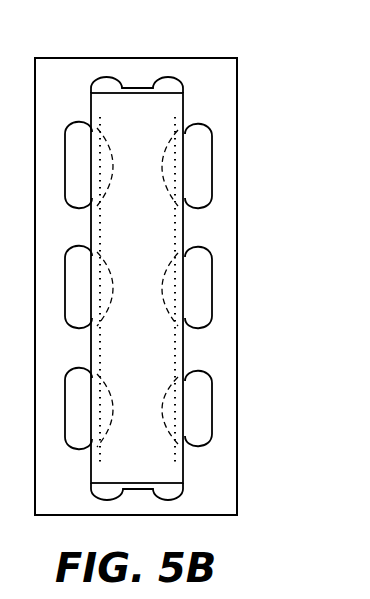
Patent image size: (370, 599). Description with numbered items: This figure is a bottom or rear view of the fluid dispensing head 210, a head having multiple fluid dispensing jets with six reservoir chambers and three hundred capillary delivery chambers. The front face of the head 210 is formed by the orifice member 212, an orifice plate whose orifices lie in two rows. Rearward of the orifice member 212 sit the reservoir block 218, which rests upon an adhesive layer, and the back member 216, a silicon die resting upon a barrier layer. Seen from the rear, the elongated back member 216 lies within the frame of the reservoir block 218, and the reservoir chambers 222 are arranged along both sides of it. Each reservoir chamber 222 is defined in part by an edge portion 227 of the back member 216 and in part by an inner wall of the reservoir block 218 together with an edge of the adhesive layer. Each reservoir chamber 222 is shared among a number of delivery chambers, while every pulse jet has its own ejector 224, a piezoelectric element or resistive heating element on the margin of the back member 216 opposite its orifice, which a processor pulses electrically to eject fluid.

The fluid dispensing head 210 is at (193, 263).
The orifice member 212 is at (222, 291).
The back member 216 is at (160, 352).
The reservoir block 218 is at (208, 72).
The reservoir chamber 222 is at (198, 147).
The ejector 224 is at (172, 285).
The edge portion 227 is at (185, 227).